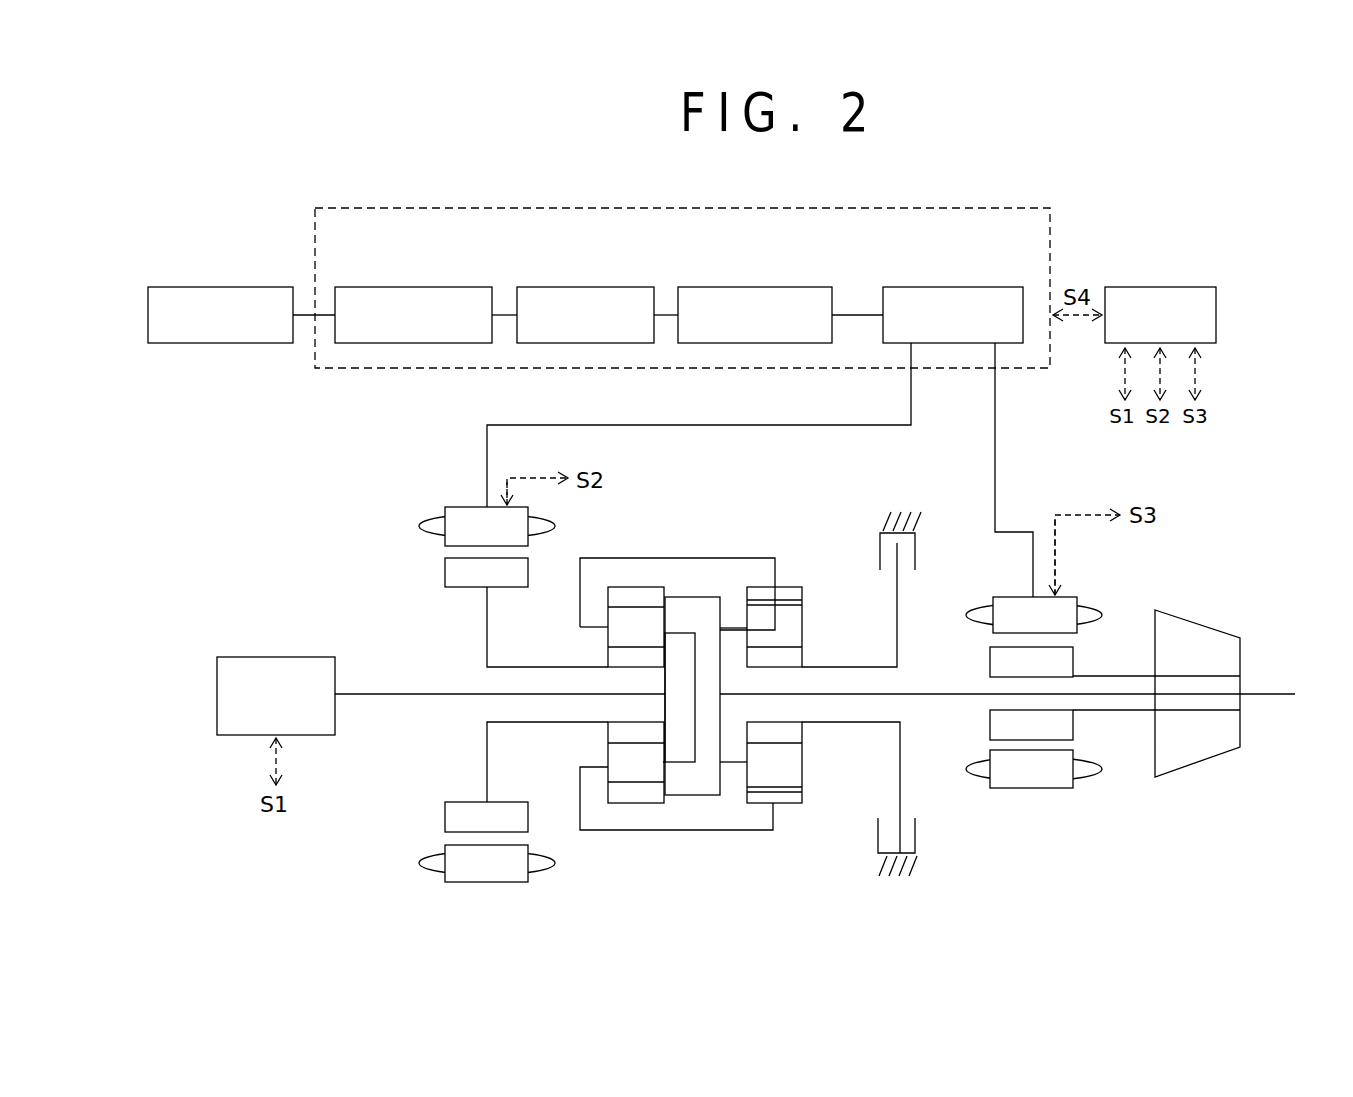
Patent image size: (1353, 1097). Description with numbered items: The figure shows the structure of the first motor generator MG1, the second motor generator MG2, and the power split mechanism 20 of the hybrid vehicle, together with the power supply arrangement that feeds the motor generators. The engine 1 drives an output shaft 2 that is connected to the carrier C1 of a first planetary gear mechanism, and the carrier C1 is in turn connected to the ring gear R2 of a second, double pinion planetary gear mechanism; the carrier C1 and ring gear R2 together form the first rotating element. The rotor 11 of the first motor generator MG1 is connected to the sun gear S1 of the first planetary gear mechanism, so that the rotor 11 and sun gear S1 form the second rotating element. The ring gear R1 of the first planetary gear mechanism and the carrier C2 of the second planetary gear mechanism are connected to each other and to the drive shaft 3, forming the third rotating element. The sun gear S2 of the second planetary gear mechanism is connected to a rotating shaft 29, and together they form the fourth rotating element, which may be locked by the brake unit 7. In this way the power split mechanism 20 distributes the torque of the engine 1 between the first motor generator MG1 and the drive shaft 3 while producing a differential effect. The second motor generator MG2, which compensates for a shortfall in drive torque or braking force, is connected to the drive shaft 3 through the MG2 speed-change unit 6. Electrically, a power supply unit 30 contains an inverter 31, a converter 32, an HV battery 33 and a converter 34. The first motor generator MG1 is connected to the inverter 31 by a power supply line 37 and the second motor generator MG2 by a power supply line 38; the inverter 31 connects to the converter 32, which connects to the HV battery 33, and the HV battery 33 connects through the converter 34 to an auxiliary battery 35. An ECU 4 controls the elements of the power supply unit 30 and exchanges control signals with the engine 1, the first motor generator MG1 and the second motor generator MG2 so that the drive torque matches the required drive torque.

The engine 1 is at (284, 656).
The output shaft 2 is at (378, 697).
The drive shaft 3 is at (1272, 700).
The ECU 4 is at (1180, 286).
The MG2 speed-change unit 6 is at (1199, 625).
The brake unit 7 is at (925, 548).
The rotor 11 is at (462, 588).
The power split mechanism 20 is at (694, 657).
The rotating shaft 29 is at (874, 665).
The power supply unit 30 is at (940, 207).
The inverter 31 is at (959, 286).
The converter 32 is at (786, 286).
The HV battery 33 is at (619, 286).
The converter 34 is at (432, 286).
The auxiliary battery 35 is at (218, 286).
The power supply line 37 is at (818, 428).
The power supply line 38 is at (995, 405).
The first motor generator MG1 is at (408, 514).
The second motor generator MG2 is at (1083, 587).
The ring gear R1 is at (648, 585).
The ring gear R2 is at (788, 587).
The sun gear S1 is at (608, 655).
The sun gear S2 is at (798, 650).
The carrier C1 is at (680, 635).
The carrier C2 is at (740, 628).